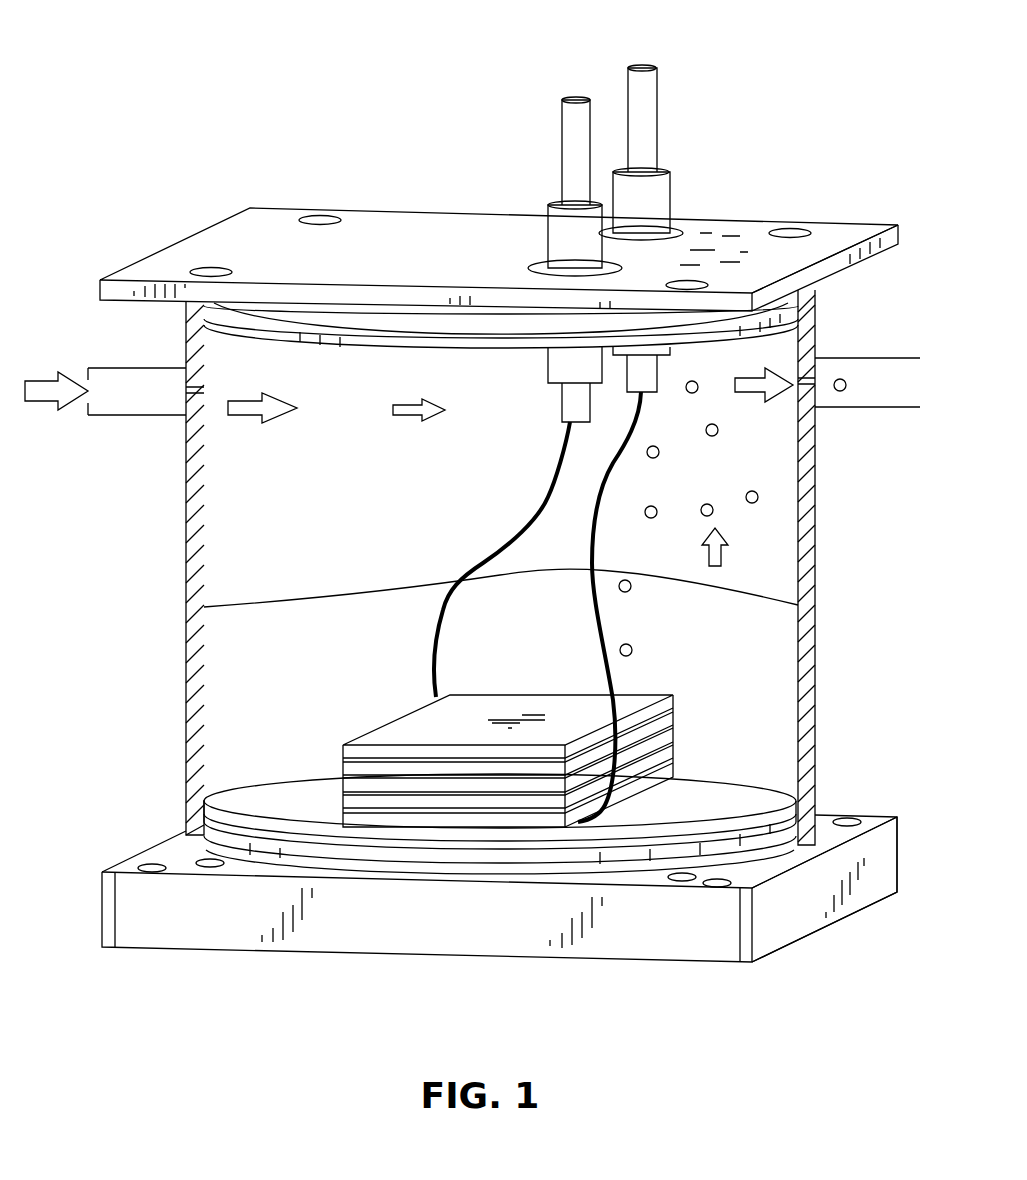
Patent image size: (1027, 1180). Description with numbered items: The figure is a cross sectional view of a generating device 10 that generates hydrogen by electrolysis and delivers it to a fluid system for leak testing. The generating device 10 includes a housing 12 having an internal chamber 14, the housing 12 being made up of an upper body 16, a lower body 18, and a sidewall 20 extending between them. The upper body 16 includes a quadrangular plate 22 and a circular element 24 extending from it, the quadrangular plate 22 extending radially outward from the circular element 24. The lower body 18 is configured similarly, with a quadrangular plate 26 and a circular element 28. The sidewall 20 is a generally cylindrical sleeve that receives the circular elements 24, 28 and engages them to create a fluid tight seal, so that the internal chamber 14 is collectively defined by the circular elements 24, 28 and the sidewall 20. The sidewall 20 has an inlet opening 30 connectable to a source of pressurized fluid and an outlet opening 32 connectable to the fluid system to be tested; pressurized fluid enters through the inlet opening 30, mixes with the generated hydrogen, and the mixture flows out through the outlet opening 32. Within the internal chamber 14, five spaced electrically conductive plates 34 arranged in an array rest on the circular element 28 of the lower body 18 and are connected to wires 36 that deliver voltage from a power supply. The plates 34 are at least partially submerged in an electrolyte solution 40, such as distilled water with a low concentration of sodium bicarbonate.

The generating device 10 is at (230, 72).
The housing 12 is at (170, 700).
The internal chamber 14 is at (773, 533).
The upper body 16 is at (384, 218).
The lower body 18 is at (172, 942).
The sidewall 20 is at (808, 690).
The quadrangular plate 22 is at (862, 228).
The circular element 24 is at (268, 325).
The quadrangular plate 26 is at (793, 930).
The circular element 28 is at (633, 806).
The inlet opening 30 is at (186, 382).
The outlet opening 32 is at (800, 355).
The electrically conductive bodies 34 is at (558, 674).
The wires 36 is at (593, 538).
The electrolyte solution 40 is at (770, 637).